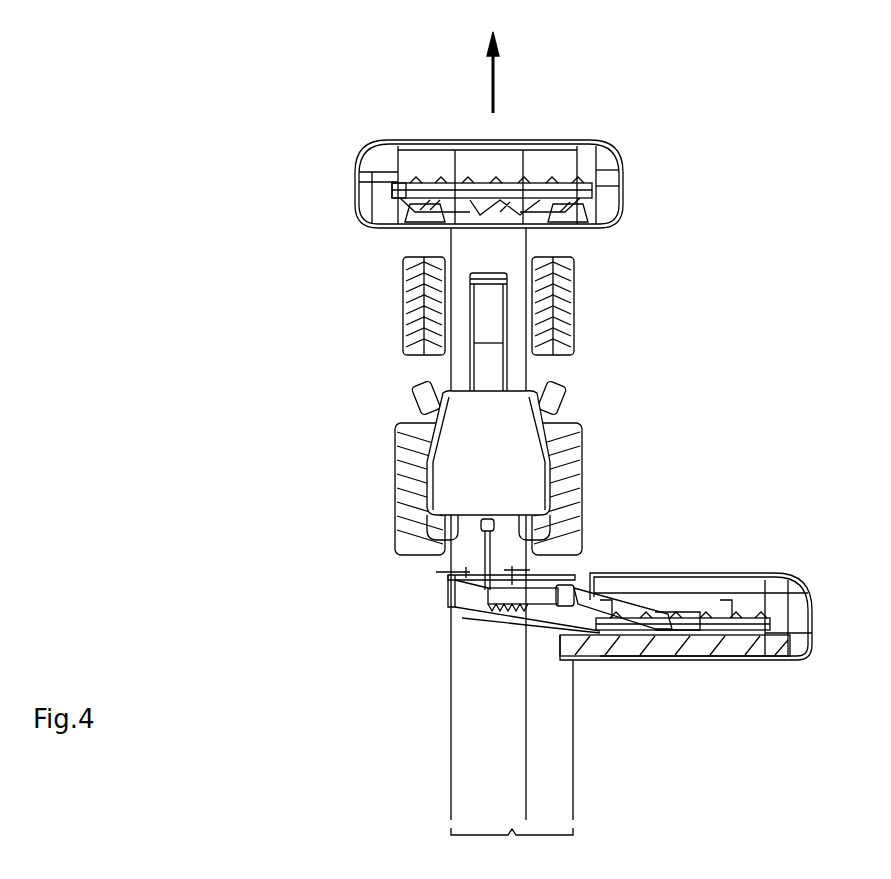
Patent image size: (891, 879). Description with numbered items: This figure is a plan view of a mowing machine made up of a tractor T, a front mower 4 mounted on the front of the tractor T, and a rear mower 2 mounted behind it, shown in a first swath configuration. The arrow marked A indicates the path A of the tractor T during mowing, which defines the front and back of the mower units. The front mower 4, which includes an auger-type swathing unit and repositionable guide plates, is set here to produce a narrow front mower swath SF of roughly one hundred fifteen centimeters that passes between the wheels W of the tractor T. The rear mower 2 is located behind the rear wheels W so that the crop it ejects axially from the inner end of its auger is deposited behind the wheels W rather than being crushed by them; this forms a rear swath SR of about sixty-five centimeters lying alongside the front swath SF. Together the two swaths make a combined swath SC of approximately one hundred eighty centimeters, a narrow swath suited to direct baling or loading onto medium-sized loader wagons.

The front mower 4 is at (617, 146).
The rear mower 2 is at (803, 559).
The path of the tractor A is at (494, 78).
The tractor T is at (452, 413).
The wheels W is at (403, 280).
The front mower swath SF is at (463, 246).
The rear swath SR is at (560, 714).
The combined swath SC is at (512, 849).